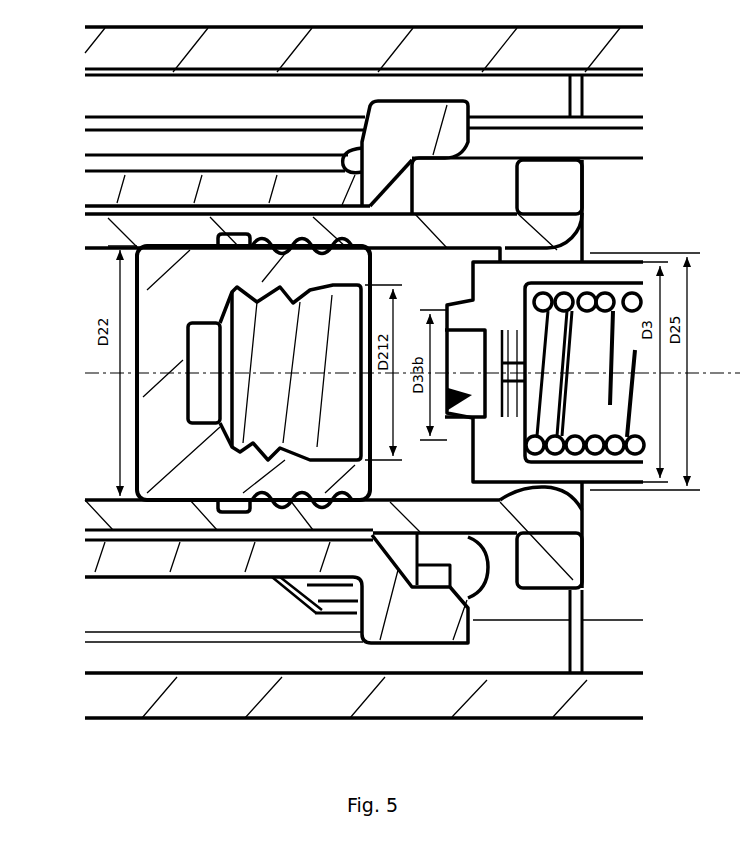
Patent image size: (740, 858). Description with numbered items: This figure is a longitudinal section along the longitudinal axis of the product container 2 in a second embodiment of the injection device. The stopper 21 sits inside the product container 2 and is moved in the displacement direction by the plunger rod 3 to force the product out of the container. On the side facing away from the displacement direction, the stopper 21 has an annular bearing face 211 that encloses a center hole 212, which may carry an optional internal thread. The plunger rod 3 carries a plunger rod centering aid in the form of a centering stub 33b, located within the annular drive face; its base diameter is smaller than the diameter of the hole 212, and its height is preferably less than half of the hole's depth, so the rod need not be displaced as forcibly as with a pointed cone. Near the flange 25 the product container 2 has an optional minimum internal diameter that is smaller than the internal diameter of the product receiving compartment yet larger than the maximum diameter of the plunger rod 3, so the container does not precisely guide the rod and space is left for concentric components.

The product container 2 is at (92, 231).
The stopper 21 is at (153, 302).
The annular bearing face 211 is at (370, 268).
The center hole 212 is at (345, 452).
The flange 25 is at (557, 215).
The plunger rod 3 is at (580, 473).
The centering stub 33b is at (472, 306).